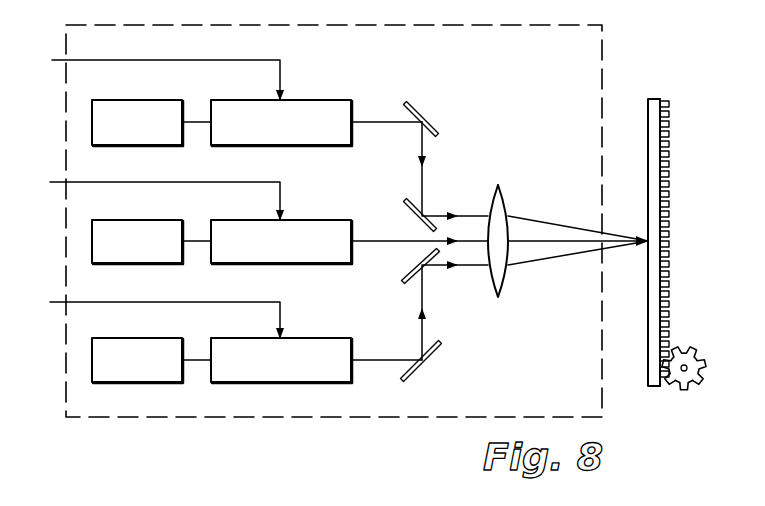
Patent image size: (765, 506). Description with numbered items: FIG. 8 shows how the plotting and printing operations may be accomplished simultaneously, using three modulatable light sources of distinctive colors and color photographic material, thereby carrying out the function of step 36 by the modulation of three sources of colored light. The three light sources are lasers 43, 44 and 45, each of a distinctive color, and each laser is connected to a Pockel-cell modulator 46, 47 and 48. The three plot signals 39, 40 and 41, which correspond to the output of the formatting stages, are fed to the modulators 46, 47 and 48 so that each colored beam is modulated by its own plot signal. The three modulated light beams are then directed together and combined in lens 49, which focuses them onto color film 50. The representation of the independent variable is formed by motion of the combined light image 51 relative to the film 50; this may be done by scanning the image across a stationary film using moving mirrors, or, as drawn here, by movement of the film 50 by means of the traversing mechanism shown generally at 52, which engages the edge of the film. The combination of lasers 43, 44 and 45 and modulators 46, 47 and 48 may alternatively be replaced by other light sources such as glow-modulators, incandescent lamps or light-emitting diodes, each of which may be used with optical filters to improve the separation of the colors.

The step 36 is at (603, 38).
The plot signal 39 is at (153, 76).
The plot signal 40 is at (152, 197).
The plot signal 41 is at (152, 316).
The laser 43 is at (136, 100).
The laser 44 is at (140, 220).
The laser 45 is at (137, 338).
The Pockel-cell modulator 46 is at (321, 100).
The Pockel-cell modulator 47 is at (317, 220).
The Pockel-cell modulator 48 is at (318, 338).
The lens 49 is at (500, 185).
The color film 50 is at (657, 98).
The combined light image 51 is at (642, 247).
The traversing mechanism 52 is at (667, 387).